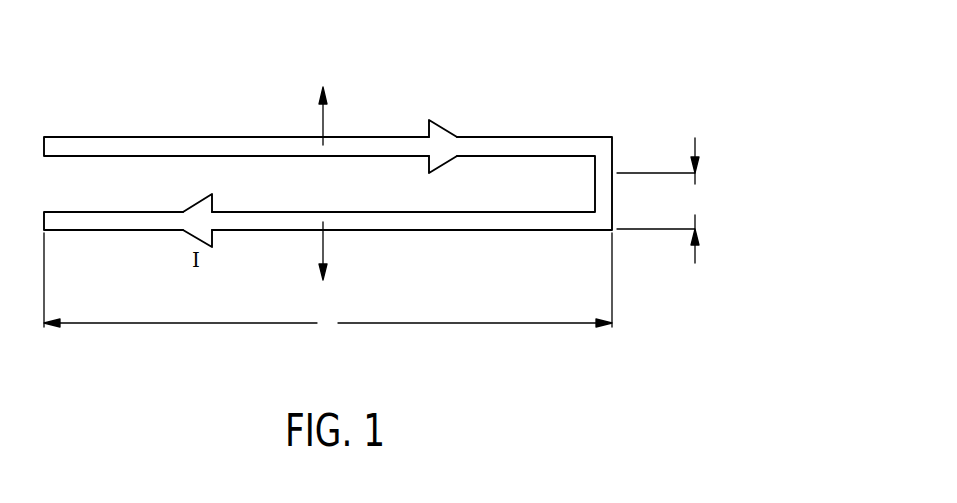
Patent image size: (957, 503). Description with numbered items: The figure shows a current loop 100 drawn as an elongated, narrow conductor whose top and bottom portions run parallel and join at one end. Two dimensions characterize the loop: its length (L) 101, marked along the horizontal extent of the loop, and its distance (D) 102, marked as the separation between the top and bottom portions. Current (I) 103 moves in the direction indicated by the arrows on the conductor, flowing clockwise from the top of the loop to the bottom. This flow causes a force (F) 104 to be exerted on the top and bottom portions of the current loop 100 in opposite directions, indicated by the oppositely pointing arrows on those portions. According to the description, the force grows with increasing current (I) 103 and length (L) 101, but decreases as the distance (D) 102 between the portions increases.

The current loop 100 is at (533, 107).
The length (L) 101 is at (327, 336).
The distance (D) 102 is at (705, 200).
The current (I) 103 is at (438, 130).
The force (F) 104 is at (321, 113).